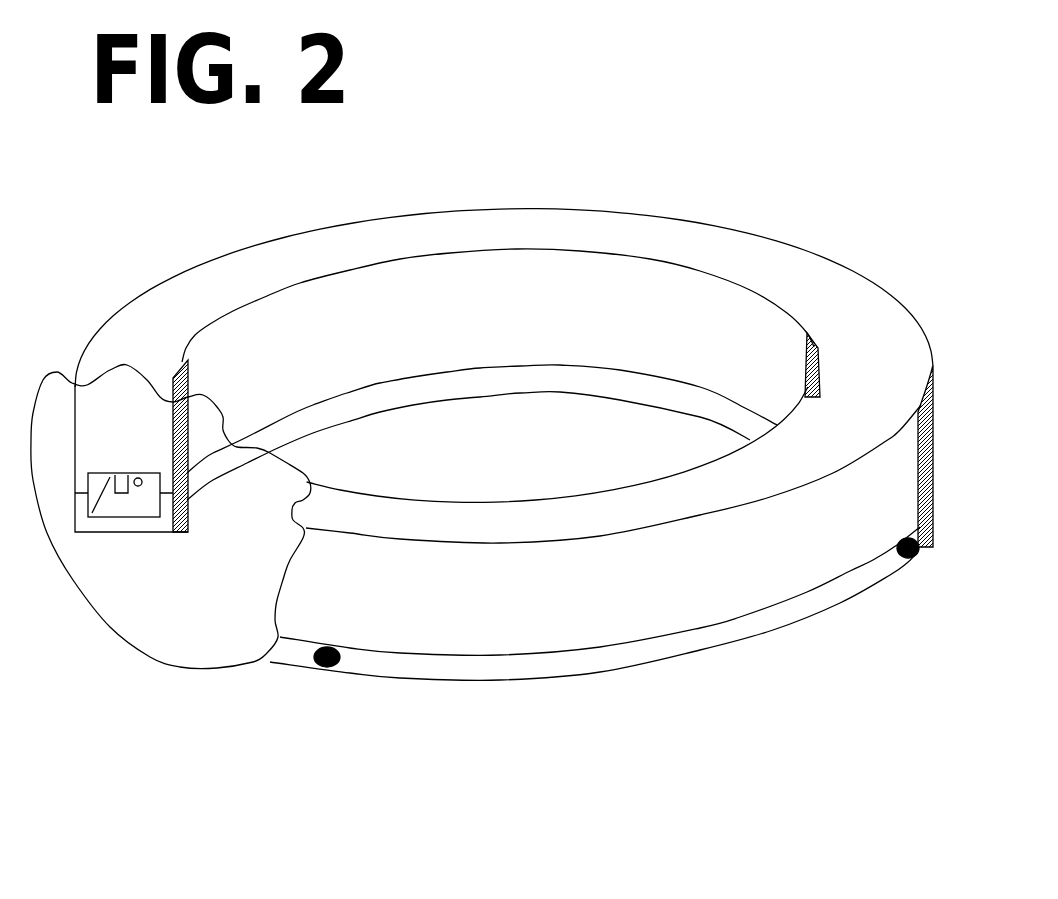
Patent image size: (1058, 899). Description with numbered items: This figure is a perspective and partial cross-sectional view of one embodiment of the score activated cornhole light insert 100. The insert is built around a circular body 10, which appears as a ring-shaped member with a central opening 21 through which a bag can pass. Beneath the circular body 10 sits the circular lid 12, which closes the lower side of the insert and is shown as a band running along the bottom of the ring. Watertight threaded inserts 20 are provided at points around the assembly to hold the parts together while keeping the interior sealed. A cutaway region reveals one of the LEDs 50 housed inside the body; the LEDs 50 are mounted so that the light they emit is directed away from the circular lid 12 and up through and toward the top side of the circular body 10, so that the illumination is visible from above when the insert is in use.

The score activated cornhole light insert 100 is at (489, 475).
The circular body 10 is at (840, 288).
The circular lid 12 is at (735, 632).
The watertight threaded inserts 20 is at (333, 670).
The central opening 21 is at (531, 433).
The LEDs 50 is at (135, 497).